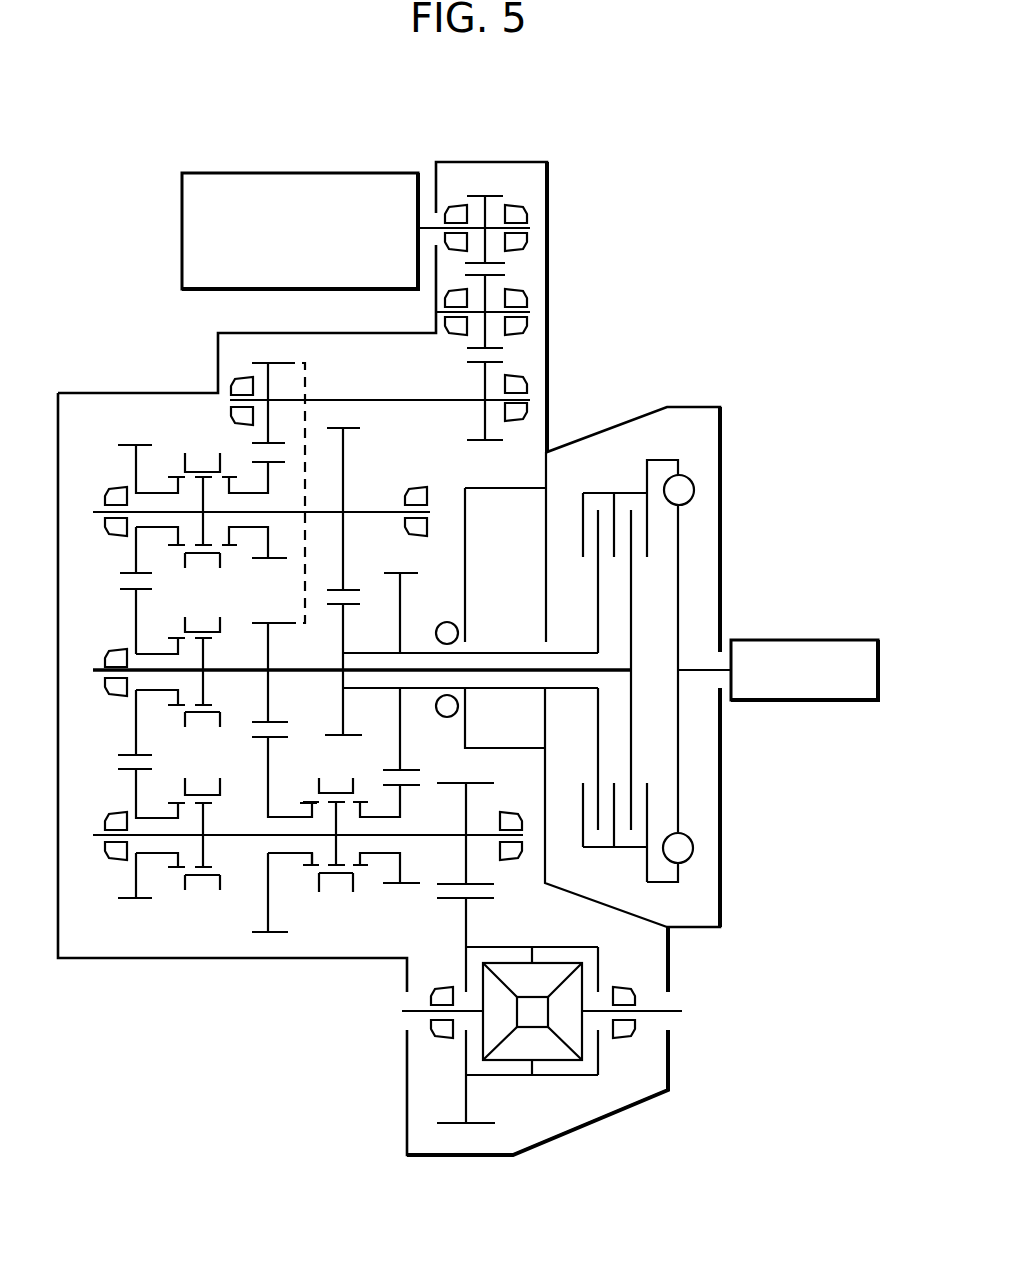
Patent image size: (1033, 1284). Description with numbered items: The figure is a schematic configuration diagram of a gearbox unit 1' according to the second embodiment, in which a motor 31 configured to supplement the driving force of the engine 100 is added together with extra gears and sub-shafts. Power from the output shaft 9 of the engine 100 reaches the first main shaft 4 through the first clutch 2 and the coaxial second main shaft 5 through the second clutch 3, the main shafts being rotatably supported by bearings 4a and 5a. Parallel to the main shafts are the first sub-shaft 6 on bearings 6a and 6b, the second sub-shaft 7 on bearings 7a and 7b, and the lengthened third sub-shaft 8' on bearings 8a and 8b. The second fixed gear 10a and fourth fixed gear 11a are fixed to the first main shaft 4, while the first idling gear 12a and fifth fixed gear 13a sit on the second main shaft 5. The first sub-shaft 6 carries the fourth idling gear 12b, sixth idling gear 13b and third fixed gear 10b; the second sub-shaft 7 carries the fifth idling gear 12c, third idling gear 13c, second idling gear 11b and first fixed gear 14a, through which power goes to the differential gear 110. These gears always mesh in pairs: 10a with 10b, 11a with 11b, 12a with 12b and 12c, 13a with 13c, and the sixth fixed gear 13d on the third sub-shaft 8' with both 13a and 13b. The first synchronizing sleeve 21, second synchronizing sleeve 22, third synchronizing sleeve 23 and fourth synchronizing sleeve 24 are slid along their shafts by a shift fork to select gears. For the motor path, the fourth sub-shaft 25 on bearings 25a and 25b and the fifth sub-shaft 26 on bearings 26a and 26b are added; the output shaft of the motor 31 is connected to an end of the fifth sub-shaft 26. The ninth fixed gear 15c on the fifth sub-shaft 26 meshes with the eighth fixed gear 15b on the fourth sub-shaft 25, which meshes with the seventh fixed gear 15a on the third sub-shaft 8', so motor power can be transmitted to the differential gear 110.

The gearbox unit 1' is at (679, 184).
The first clutch 2 is at (598, 492).
The second clutch 3 is at (628, 492).
The first main shaft 4 is at (568, 652).
The bearing 4a is at (446, 622).
The second main shaft 5 is at (513, 667).
The bearing 5a is at (109, 652).
The first sub-shaft 6 is at (366, 510).
The bearing 6a is at (411, 488).
The bearing 6b is at (109, 534).
The second sub-shaft 7 is at (428, 833).
The bearing 7a is at (514, 850).
The bearing 7b is at (109, 860).
The third sub-shaft 8' is at (380, 481).
The bearing 8a is at (516, 378).
The bearing 8b is at (238, 378).
The output shaft 9 is at (698, 668).
The second fixed gear 10a is at (330, 606).
The third fixed gear 10b is at (355, 428).
The fourth fixed gear 11a is at (392, 572).
The second idling gear 11b is at (395, 884).
The first idling gear 12a is at (130, 755).
The fourth idling gear 12b is at (131, 443).
The fifth idling gear 12c is at (130, 899).
The fifth fixed gear 13a is at (262, 622).
The sixth idling gear 13b is at (262, 462).
The third idling gear 13c is at (262, 932).
The sixth fixed gear 13d is at (268, 362).
The first fixed gear 14a is at (480, 783).
The seventh fixed gear 15a is at (485, 445).
The eighth fixed gear 15b is at (467, 357).
The ninth fixed gear 15c is at (487, 195).
The first synchronizing sleeve 21 is at (204, 726).
The second synchronizing sleeve 22 is at (337, 880).
The third synchronizing sleeve 23 is at (197, 463).
The fourth synchronizing sleeve 24 is at (197, 880).
The fourth sub-shaft 25 is at (536, 312).
The bearing 25a is at (522, 292).
The bearing 25b is at (455, 328).
The fifth sub-shaft 26 is at (534, 228).
The bearing 26a is at (517, 203).
The bearing 26b is at (455, 203).
The motor 31 is at (182, 193).
The engine 100 is at (843, 640).
The differential gear 110 is at (552, 1077).